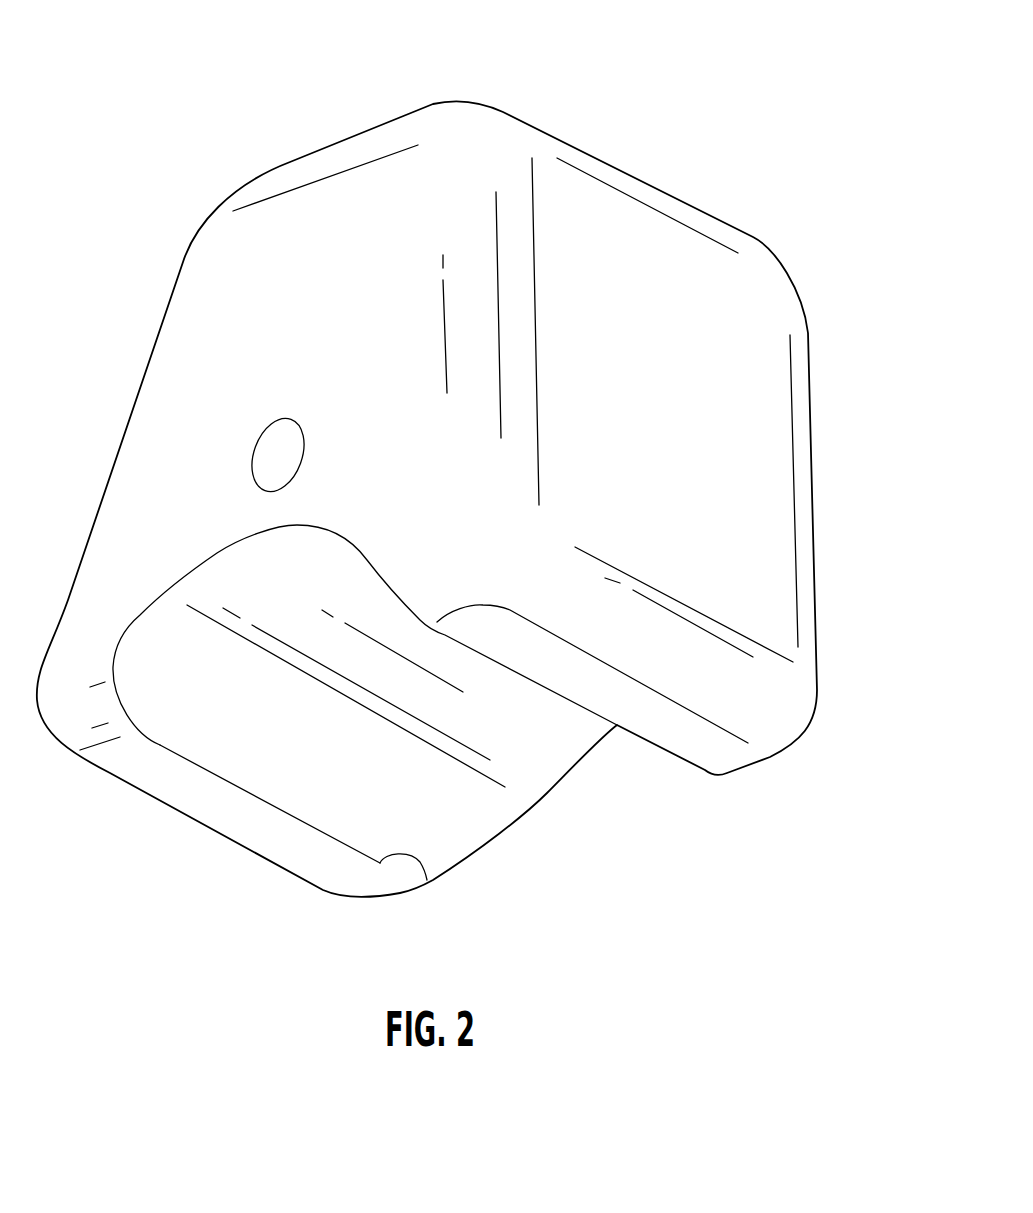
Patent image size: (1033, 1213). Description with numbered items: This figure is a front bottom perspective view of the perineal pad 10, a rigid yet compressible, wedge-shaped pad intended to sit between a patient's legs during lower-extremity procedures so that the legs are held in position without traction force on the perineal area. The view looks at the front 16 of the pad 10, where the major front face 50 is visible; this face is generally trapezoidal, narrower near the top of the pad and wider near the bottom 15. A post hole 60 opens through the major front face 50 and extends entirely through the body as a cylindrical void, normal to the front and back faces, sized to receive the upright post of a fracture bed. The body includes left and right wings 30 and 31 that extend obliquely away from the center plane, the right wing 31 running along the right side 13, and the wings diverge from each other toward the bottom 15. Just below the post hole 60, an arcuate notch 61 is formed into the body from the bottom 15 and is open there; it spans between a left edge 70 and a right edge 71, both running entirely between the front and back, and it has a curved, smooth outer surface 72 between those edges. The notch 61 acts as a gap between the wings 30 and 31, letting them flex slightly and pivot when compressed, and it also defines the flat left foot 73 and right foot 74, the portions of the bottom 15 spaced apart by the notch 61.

The perineal pad 10 is at (815, 121).
The right side 13 is at (750, 459).
The bottom 15 is at (115, 763).
The front 16 is at (188, 380).
The left wing 30 is at (146, 817).
The right wing 31 is at (746, 773).
The major front face 50 is at (294, 337).
The post hole 60 is at (276, 463).
The notch 61 is at (492, 752).
The left edge 70 is at (427, 881).
The right edge 71 is at (687, 766).
The outer surface 72 is at (271, 728).
The left foot 73 is at (282, 843).
The right foot 74 is at (648, 717).